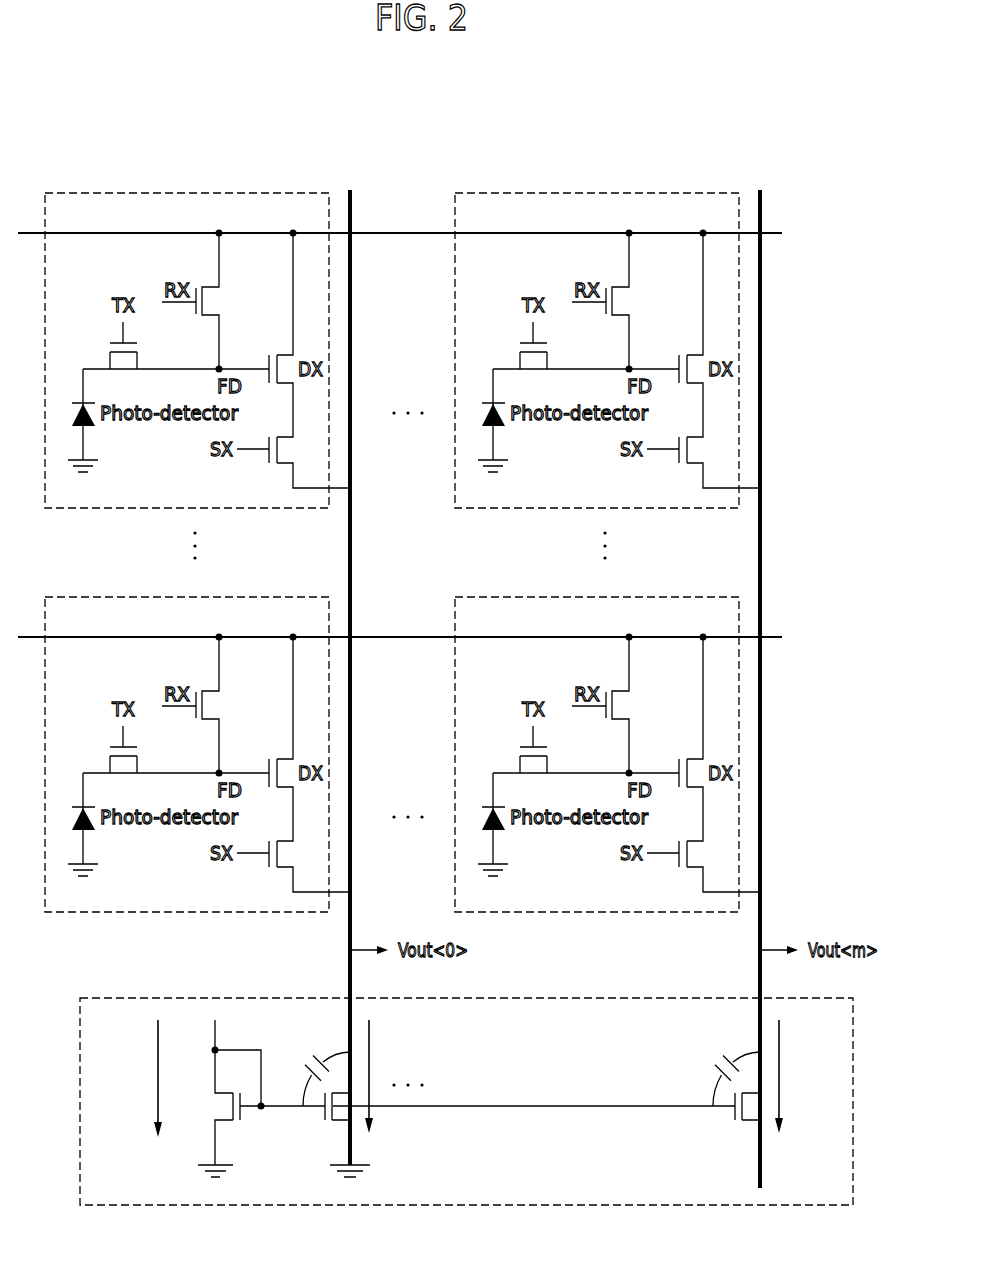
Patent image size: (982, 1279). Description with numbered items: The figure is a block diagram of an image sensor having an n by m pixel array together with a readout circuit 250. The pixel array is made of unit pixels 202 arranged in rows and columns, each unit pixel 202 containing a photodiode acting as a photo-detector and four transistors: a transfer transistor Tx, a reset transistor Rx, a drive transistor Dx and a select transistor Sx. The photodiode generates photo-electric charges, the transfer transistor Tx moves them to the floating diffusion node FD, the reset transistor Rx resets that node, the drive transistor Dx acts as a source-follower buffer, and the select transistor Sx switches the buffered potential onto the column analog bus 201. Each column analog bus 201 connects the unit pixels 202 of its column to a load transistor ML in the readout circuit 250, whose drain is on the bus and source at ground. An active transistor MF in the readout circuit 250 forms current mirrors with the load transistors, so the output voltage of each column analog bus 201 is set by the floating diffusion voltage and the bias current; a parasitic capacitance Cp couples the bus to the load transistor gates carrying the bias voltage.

The column analog bus 201 is at (350, 215).
The unit pixel 202 is at (257, 193).
The readout circuit 250 is at (808, 998).